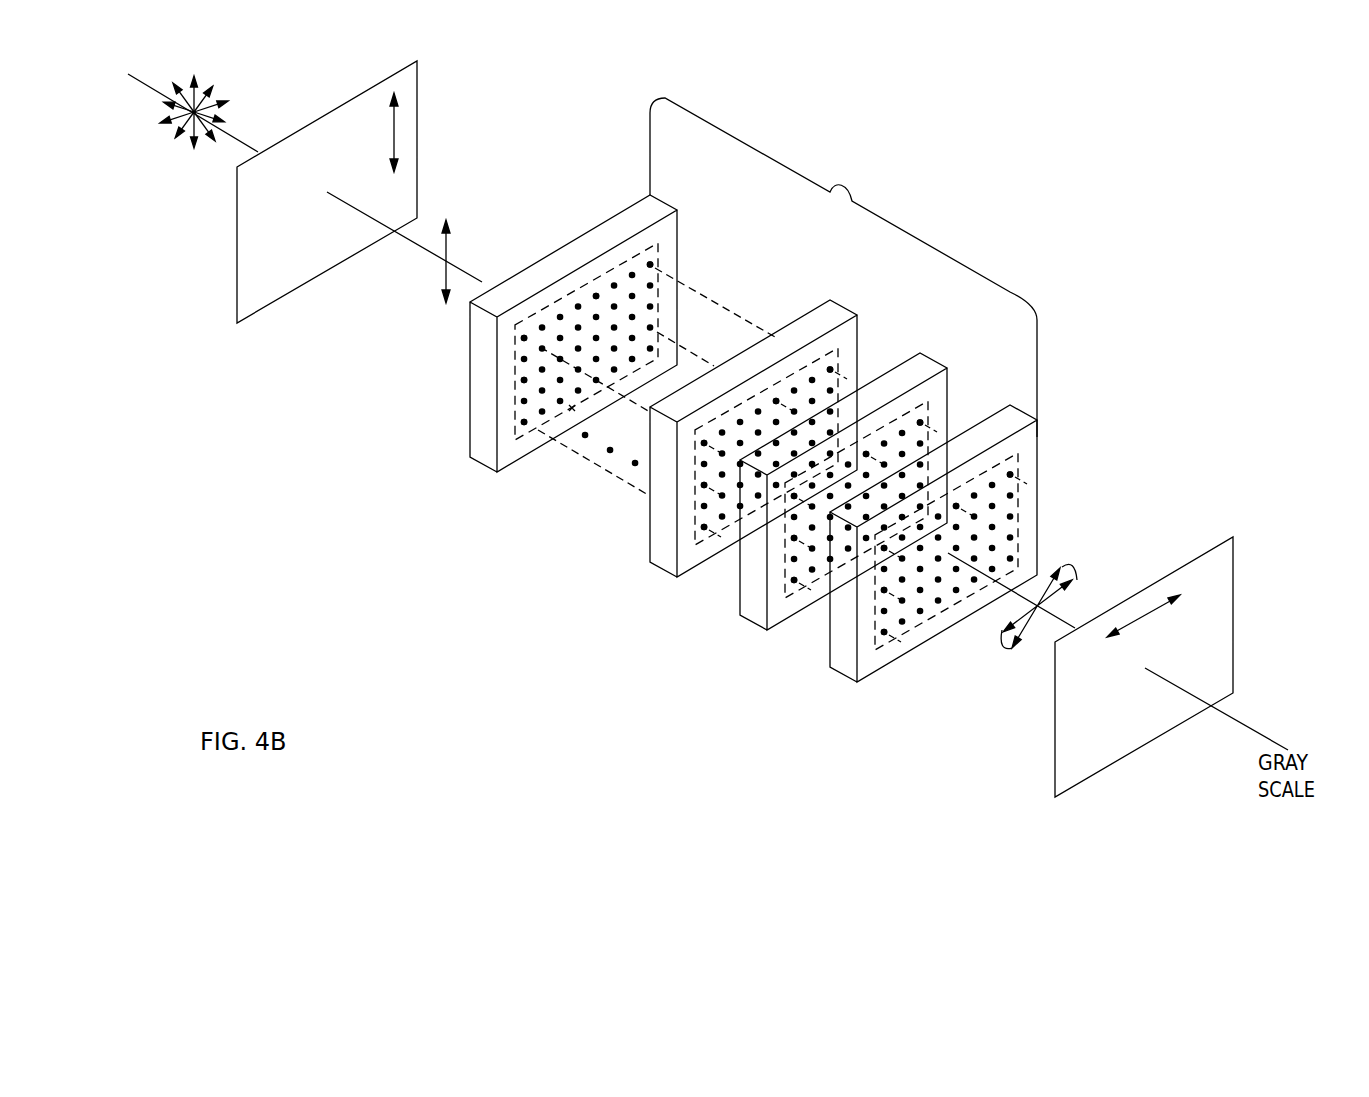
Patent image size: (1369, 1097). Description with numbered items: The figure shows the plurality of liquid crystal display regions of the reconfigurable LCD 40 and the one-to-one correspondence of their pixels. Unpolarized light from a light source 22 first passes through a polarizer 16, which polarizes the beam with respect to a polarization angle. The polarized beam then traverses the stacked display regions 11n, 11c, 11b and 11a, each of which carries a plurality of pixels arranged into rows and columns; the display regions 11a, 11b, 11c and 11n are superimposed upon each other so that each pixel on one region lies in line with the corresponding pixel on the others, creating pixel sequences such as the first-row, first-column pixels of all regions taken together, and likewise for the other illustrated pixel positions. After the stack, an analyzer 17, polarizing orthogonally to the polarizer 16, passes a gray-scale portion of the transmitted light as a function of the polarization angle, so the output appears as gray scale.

The light source 22 is at (195, 125).
The polarizer 16 is at (250, 287).
The analyzer 17 is at (1067, 763).
The reconfigurable LCD 40 is at (843, 267).
The liquid crystal display region 11n is at (652, 195).
The liquid crystal display region 11c is at (833, 307).
The liquid crystal display region 11b is at (917, 358).
The liquid crystal display region 11a is at (1037, 437).